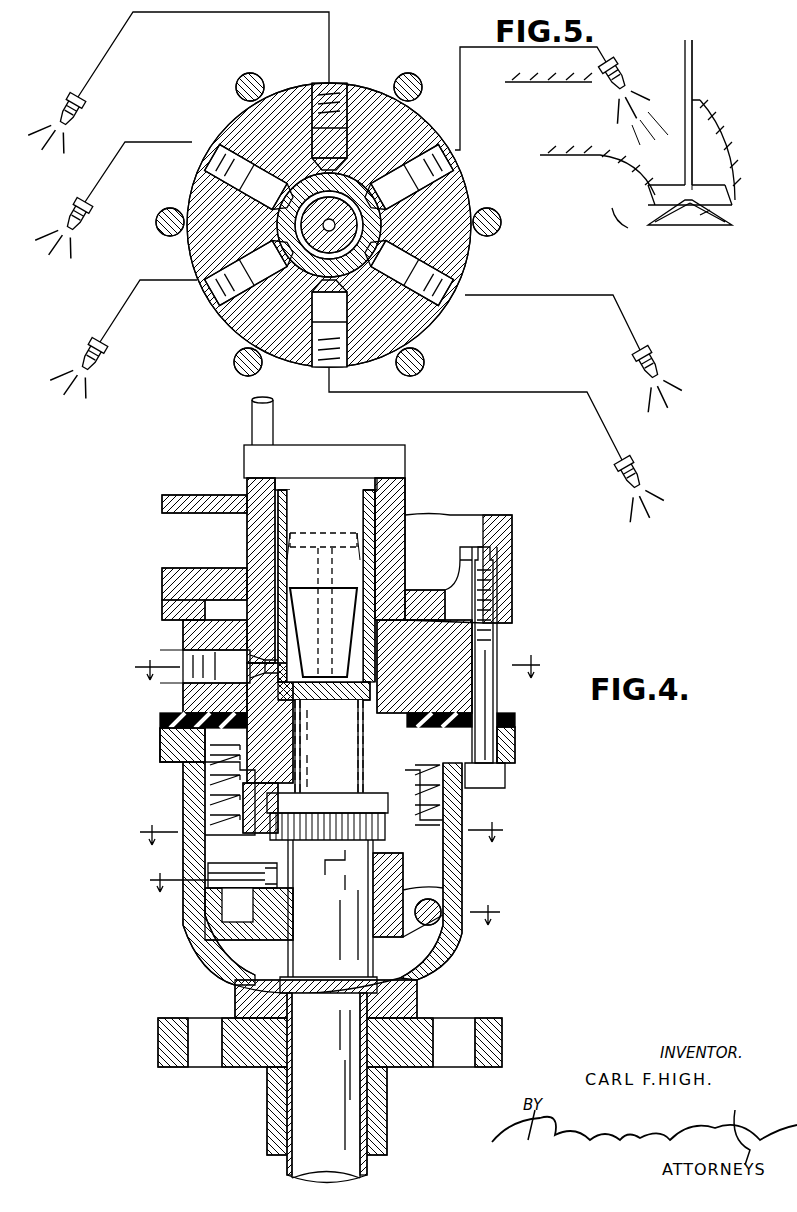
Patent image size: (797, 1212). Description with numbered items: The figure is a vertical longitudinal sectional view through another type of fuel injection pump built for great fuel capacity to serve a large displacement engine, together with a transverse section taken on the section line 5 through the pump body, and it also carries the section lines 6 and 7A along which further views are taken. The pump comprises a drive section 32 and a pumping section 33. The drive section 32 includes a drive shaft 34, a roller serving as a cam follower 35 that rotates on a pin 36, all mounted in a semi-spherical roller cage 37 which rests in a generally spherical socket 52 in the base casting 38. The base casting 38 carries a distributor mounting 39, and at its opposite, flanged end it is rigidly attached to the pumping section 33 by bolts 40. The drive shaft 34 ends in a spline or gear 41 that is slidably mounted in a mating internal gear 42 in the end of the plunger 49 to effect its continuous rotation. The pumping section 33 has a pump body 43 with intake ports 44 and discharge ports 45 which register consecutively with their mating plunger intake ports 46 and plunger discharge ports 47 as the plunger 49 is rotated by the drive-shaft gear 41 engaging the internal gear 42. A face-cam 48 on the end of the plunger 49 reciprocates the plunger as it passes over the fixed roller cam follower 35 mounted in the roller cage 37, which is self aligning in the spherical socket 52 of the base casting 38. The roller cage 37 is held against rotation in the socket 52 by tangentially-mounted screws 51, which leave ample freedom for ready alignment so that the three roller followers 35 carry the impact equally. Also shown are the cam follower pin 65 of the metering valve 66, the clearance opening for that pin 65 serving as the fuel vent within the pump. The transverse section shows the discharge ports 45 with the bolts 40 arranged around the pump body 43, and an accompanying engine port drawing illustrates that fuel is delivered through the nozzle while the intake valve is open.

In FIG. 4, the section line 5— 5 is at (336, 667).
In FIG. 4, the section line 6— 6 is at (320, 833).
In FIG. 4, the section line 7A— 7A is at (322, 898).
In FIG. 4, the drive section 32 is at (453, 966).
In FIG. 4, the pumping section 33 is at (434, 522).
In FIG. 4, the drive shaft 34 is at (322, 1100).
In FIG. 4, the cam follower 35 is at (215, 925).
In FIG. 4, the pin 36 is at (205, 895).
In FIG. 4, the roller cage 37 is at (445, 883).
In FIG. 4, the base casting 38 is at (445, 925).
In FIG. 4, the distributor mounting 39 is at (516, 742).
In FIG. 5, the bolts 40 is at (250, 73).
In FIG. 4, the bolts 40 is at (500, 643).
In FIG. 4, the spline or gear 41 is at (455, 825).
In FIG. 4, the internal gear 42 is at (440, 810).
In FIG. 5, the pump body 43 is at (367, 82).
In FIG. 4, the pump body 43 is at (495, 605).
In FIG. 4, the intake ports 44 is at (405, 590).
In FIG. 5, the discharge ports 45 is at (215, 145).
In FIG. 4, the discharge ports 45 is at (235, 668).
In FIG. 4, the plunger intake ports 46 is at (360, 600).
In FIG. 4, the plunger discharge ports 47 is at (190, 570).
In FIG. 4, the face-cam 48 is at (405, 840).
In FIG. 5, the plunger 49 is at (268, 320).
In FIG. 4, the plunger 49 is at (420, 712).
In FIG. 4, the tangentially-mounted screws 51 is at (460, 945).
In FIG. 4, the spherical socket 52 is at (240, 960).
In FIG. 4, the cam follower pin 65 is at (252, 416).
In FIG. 5, the metering valve 66 is at (278, 232).
In FIG. 4, the metering valve 66 is at (312, 492).